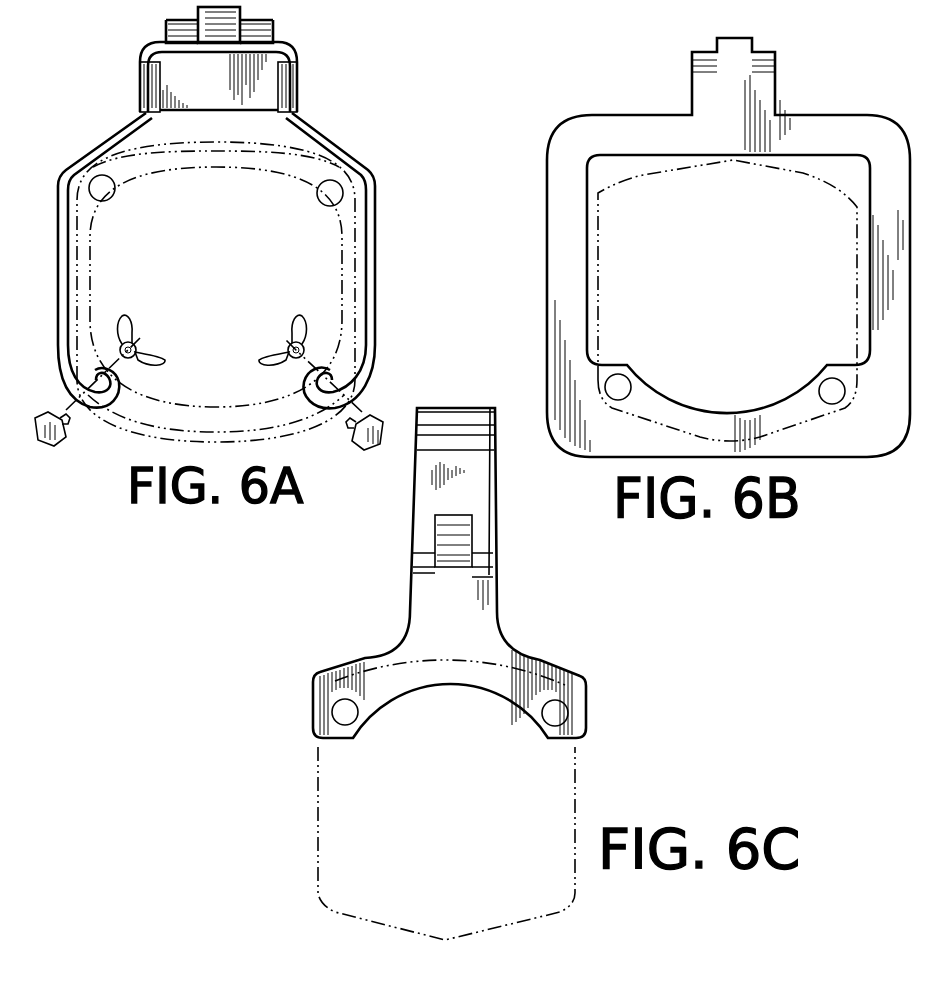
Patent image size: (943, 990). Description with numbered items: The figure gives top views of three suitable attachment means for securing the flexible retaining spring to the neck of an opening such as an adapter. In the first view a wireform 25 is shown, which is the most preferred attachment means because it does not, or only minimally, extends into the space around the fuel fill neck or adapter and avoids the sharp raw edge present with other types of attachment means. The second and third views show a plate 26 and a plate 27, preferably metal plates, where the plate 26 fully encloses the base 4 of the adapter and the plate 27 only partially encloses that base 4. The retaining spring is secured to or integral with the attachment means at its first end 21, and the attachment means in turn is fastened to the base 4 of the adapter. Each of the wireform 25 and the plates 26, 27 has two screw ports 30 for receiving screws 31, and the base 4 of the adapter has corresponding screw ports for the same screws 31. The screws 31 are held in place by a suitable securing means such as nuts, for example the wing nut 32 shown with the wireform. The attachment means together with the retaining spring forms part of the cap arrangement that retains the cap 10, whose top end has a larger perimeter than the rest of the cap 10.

In FIG. 6A, the base 4 is at (345, 222).
In FIG. 6B, the base 4 is at (598, 271).
In FIG. 6C, the base 4 is at (578, 780).
In FIG. 6A, the cap 10 is at (355, 300).
In FIG. 6A, the first end 21 is at (300, 80).
In FIG. 6A, the wireform 25 is at (334, 141).
In FIG. 6B, the plate 26 is at (612, 137).
In FIG. 6C, the plate 27 is at (485, 623).
In FIG. 6A, the screw ports 30 is at (333, 392).
In FIG. 6B, the screw ports 30 is at (630, 380).
In FIG. 6C, the screw ports 30 is at (566, 708).
In FIG. 6A, the screws 31 is at (60, 440).
In FIG. 6A, the wing nut 32 is at (284, 333).